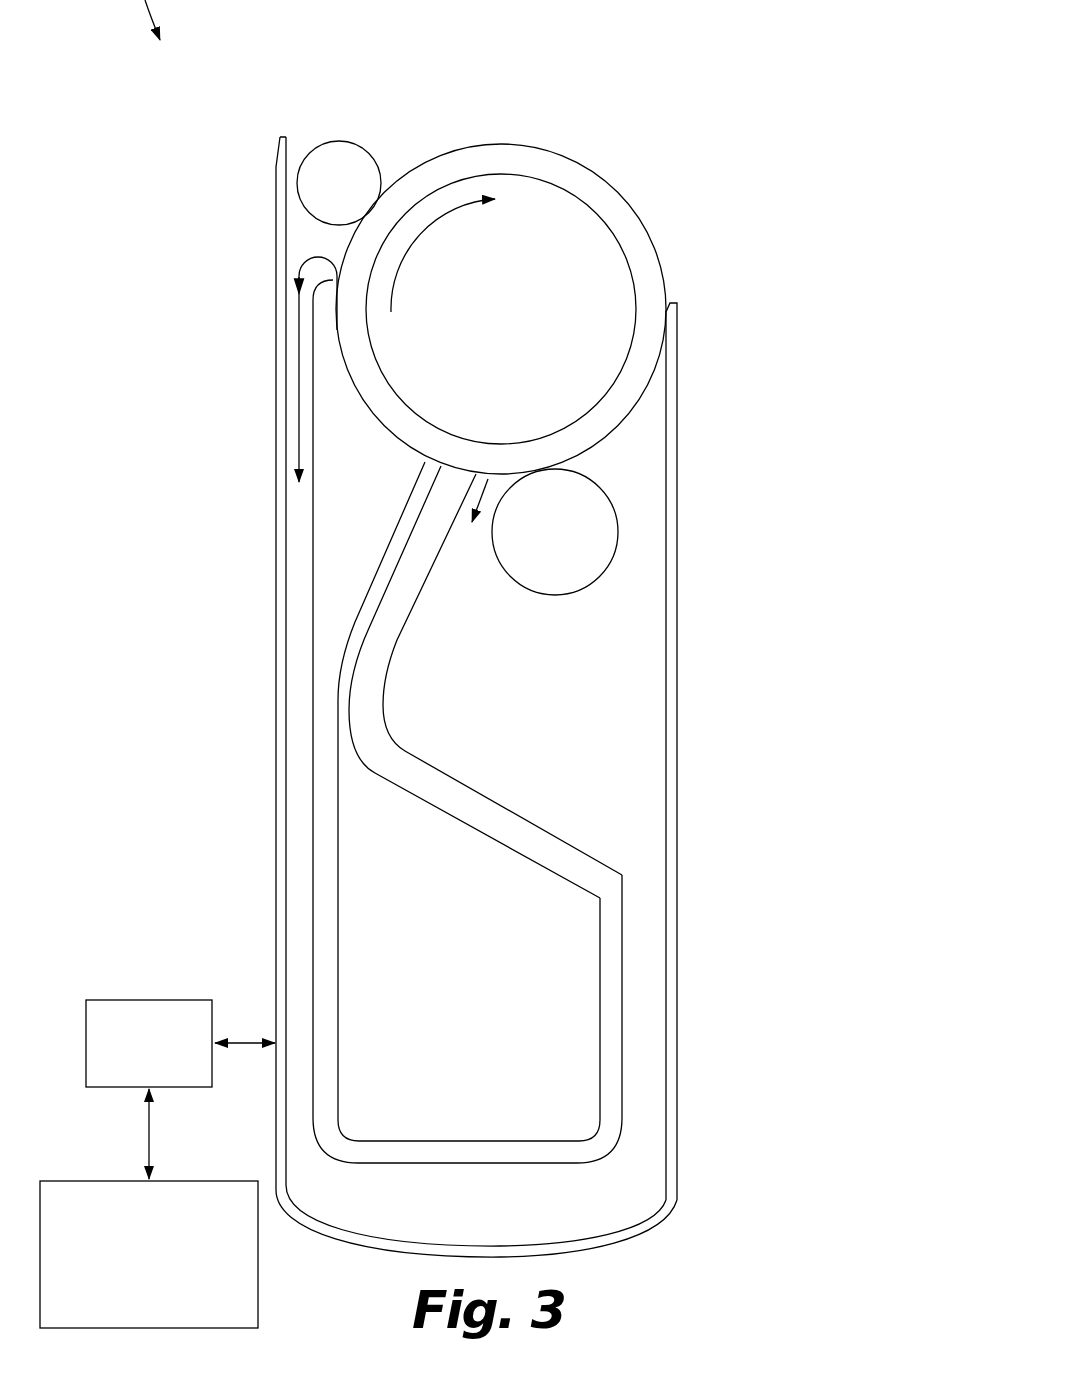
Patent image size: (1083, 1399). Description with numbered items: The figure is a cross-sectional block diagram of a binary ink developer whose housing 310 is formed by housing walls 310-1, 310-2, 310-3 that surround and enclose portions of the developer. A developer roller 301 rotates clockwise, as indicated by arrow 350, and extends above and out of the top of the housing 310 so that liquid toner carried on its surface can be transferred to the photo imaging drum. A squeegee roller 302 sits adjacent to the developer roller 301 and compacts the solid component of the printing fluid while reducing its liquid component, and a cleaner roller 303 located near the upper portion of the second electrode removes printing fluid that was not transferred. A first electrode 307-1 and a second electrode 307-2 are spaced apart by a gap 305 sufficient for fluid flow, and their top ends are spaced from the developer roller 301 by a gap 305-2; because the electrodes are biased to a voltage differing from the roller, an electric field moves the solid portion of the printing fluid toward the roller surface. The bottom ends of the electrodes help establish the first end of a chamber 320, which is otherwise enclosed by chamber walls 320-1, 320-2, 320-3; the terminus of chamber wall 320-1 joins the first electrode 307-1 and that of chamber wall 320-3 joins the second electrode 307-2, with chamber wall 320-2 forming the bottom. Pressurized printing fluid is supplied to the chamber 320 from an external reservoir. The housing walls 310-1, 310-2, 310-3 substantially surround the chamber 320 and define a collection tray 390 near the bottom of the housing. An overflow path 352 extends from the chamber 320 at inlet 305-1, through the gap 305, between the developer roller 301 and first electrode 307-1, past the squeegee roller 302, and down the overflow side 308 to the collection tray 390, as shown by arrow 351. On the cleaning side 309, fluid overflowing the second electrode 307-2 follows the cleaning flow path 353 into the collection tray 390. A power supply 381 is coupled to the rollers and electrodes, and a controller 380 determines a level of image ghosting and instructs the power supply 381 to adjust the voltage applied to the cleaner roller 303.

The developer roller 301 is at (572, 227).
The squeegee roller 302 is at (342, 182).
The cleaner roller 303 is at (573, 535).
The gap 305 is at (297, 559).
The inlet 305-1 is at (340, 697).
The gap 305-2 is at (335, 324).
The first electrode 307-1 is at (331, 491).
The second electrode 307-2 is at (435, 527).
The overflow side 308 is at (302, 653).
The cleaning side 309 is at (628, 793).
The housing 310 is at (485, 734).
The housing wall 310-1 is at (287, 445).
The housing wall 310-2 is at (525, 1250).
The housing wall 310-3 is at (675, 722).
The chamber 320 is at (470, 731).
The chamber wall 320-1 is at (330, 918).
The chamber wall 320-2 is at (477, 1148).
The chamber wall 320-3 is at (620, 970).
The arrow 350 is at (455, 207).
The arrow 351 is at (298, 376).
The overflow path 352 is at (303, 262).
The cleaning flow path 353 is at (487, 480).
The controller 380 is at (131, 1279).
The power supply 381 is at (131, 1081).
The collection tray 390 is at (460, 1243).